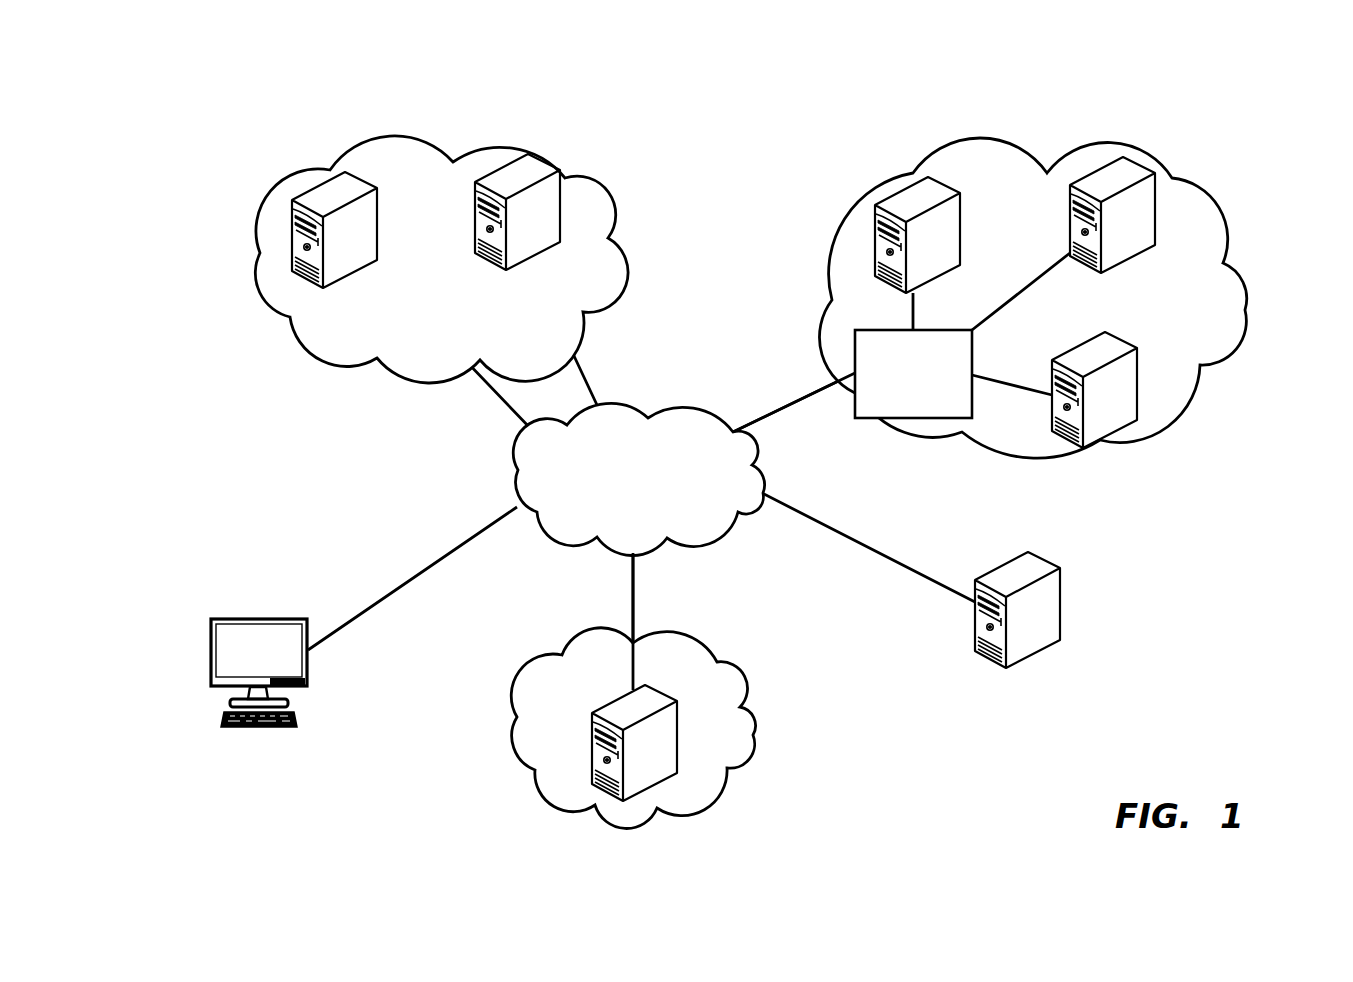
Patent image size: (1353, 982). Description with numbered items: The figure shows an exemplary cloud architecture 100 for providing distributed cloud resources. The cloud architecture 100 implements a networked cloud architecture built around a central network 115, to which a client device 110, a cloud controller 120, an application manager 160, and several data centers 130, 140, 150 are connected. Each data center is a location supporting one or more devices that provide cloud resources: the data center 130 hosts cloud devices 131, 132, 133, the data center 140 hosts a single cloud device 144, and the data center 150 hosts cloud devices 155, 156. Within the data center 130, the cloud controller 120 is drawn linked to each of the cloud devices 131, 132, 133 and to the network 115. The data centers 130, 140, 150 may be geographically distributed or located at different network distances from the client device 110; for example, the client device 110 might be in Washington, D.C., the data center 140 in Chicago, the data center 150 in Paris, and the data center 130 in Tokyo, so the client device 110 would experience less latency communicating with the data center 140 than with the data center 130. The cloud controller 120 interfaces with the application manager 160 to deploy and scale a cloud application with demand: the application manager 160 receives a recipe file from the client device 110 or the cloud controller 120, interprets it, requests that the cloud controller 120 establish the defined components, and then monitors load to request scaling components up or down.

The cloud architecture 100 is at (238, 126).
The client device 110 is at (258, 617).
The network 115 is at (690, 405).
The cloud controller 120 is at (865, 419).
The data center 130 is at (1241, 313).
The cloud device 131 is at (963, 230).
The cloud device 132 is at (1140, 166).
The cloud device 133 is at (1120, 342).
The data center 140 is at (756, 739).
The cloud device 144 is at (613, 700).
The data center 150 is at (629, 272).
The cloud device 155 is at (378, 225).
The cloud device 156 is at (540, 166).
The application manager 160 is at (1045, 563).